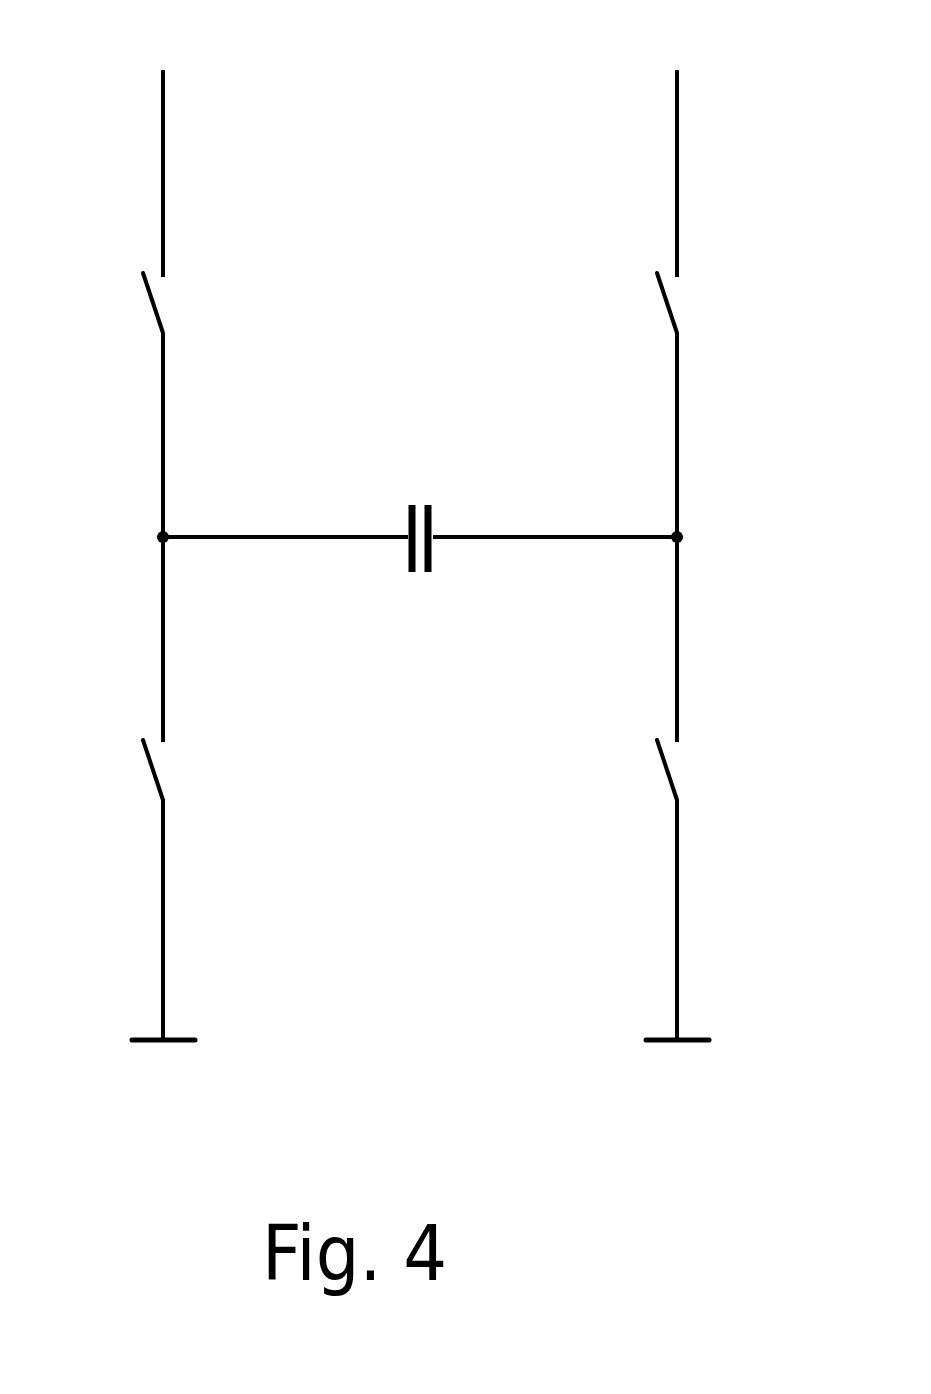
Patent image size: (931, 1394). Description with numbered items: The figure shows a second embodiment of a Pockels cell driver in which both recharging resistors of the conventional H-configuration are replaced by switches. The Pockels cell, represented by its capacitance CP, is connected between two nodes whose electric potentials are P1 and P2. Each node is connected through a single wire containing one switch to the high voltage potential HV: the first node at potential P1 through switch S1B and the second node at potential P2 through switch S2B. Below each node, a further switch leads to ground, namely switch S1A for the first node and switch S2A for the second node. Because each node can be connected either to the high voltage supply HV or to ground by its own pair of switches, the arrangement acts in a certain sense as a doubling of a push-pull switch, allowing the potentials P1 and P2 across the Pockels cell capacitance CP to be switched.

The high voltage supply HV is at (443, 138).
The switch S1B is at (197, 404).
The switch S2B is at (709, 404).
The switch S1A is at (191, 888).
The switch S2A is at (704, 888).
The electric potential P1 is at (116, 636).
The electric potential P2 is at (728, 633).
The capacitance of the Pockels cell CP is at (420, 510).